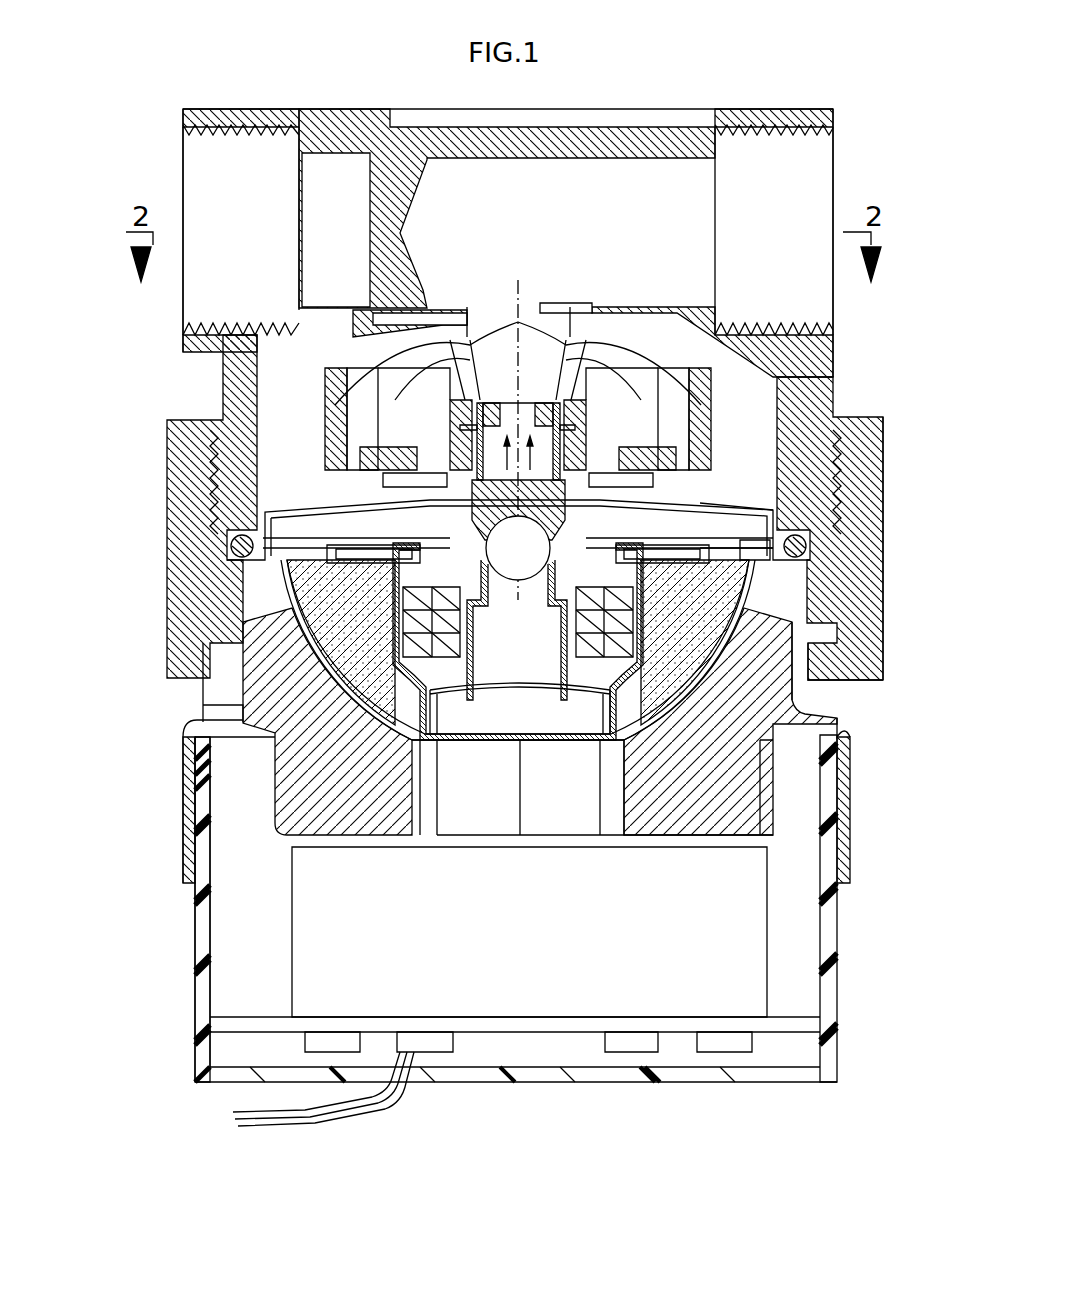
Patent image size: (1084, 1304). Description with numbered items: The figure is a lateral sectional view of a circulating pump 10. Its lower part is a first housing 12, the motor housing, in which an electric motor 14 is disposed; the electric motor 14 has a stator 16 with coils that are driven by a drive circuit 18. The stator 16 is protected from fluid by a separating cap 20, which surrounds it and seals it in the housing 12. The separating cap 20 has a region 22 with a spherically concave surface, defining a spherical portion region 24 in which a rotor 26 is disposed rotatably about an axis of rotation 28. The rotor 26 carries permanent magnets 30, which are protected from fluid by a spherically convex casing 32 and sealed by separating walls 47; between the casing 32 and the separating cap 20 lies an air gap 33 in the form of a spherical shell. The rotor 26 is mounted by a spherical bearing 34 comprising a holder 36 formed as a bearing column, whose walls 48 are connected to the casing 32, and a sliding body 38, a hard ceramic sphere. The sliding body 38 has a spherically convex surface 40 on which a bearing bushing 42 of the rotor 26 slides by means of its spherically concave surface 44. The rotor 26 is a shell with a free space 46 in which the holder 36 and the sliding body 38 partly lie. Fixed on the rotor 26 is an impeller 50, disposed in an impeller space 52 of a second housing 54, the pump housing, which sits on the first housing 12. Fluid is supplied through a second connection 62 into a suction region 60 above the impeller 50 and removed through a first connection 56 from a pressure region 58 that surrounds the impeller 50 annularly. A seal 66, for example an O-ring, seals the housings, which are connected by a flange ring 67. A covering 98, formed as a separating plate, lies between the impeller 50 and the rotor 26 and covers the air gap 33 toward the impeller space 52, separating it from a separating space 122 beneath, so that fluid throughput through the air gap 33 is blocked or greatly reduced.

The circulating pump 10 is at (755, 78).
The first housing 12 is at (839, 976).
The electric motor 14 is at (269, 876).
The stator 16 is at (292, 778).
The drive circuit 18 is at (542, 985).
The separating cap 20 is at (693, 741).
The region with spherically concave surface 22 is at (659, 741).
The spherical portion region 24 is at (697, 700).
The rotor 26 is at (335, 604).
The axis of rotation 28 is at (525, 282).
The permanent magnets 30 is at (337, 628).
The casing 32 is at (727, 552).
The air gap 33 is at (752, 570).
The spherical bearing 34 is at (473, 630).
The holder 36 is at (549, 769).
The sliding body 38 is at (529, 600).
The spherically convex surface 40 is at (603, 540).
The bearing bushing 42 is at (567, 474).
The spherically concave surface 44 is at (509, 596).
The free space 46 is at (477, 550).
The separating walls 47 is at (585, 730).
The walls 48 is at (457, 694).
The impeller 50 is at (337, 395).
The impeller space 52 is at (297, 455).
The second housing 54 is at (647, 130).
The first connection 56 is at (207, 160).
The pressure region 58 is at (757, 405).
The suction region 60 is at (507, 335).
The second connection 62 is at (825, 163).
The seal 66 is at (865, 505).
The flange ring 67 is at (873, 549).
The covering 98 is at (715, 503).
The separating space 122 is at (332, 520).